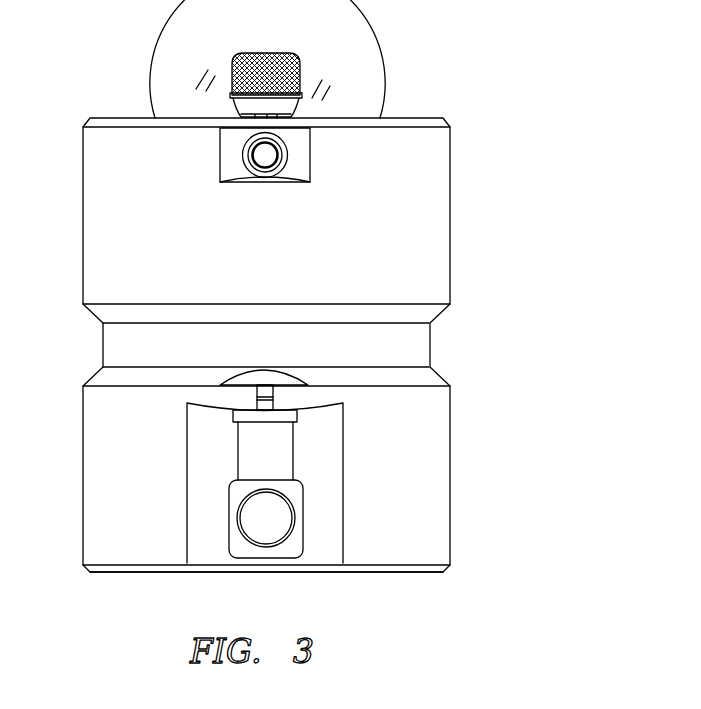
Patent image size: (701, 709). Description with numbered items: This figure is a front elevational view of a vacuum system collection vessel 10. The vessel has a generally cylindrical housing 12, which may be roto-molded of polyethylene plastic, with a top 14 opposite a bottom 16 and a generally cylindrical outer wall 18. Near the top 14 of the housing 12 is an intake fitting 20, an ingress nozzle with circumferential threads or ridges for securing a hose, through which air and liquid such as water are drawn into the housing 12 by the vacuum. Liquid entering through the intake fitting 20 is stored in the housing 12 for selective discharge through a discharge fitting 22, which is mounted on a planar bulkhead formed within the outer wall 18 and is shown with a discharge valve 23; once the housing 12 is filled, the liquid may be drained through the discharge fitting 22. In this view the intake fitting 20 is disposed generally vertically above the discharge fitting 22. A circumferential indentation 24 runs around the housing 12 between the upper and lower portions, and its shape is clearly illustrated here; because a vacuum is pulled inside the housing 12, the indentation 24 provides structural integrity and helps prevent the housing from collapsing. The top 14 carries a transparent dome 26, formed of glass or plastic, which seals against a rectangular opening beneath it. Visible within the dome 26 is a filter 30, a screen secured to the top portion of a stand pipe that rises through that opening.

The vacuum system collection vessel 10 is at (540, 88).
The housing 12 is at (438, 217).
The top 14 is at (430, 120).
The bottom 16 is at (425, 573).
The outer wall 18 is at (436, 466).
The intake fitting 20 is at (243, 156).
The discharge fitting 22 is at (287, 542).
The discharge valve 23 is at (305, 373).
The circumferential indentation 24 is at (423, 348).
The transparent dome 26 is at (343, 90).
The filter 30 is at (283, 54).